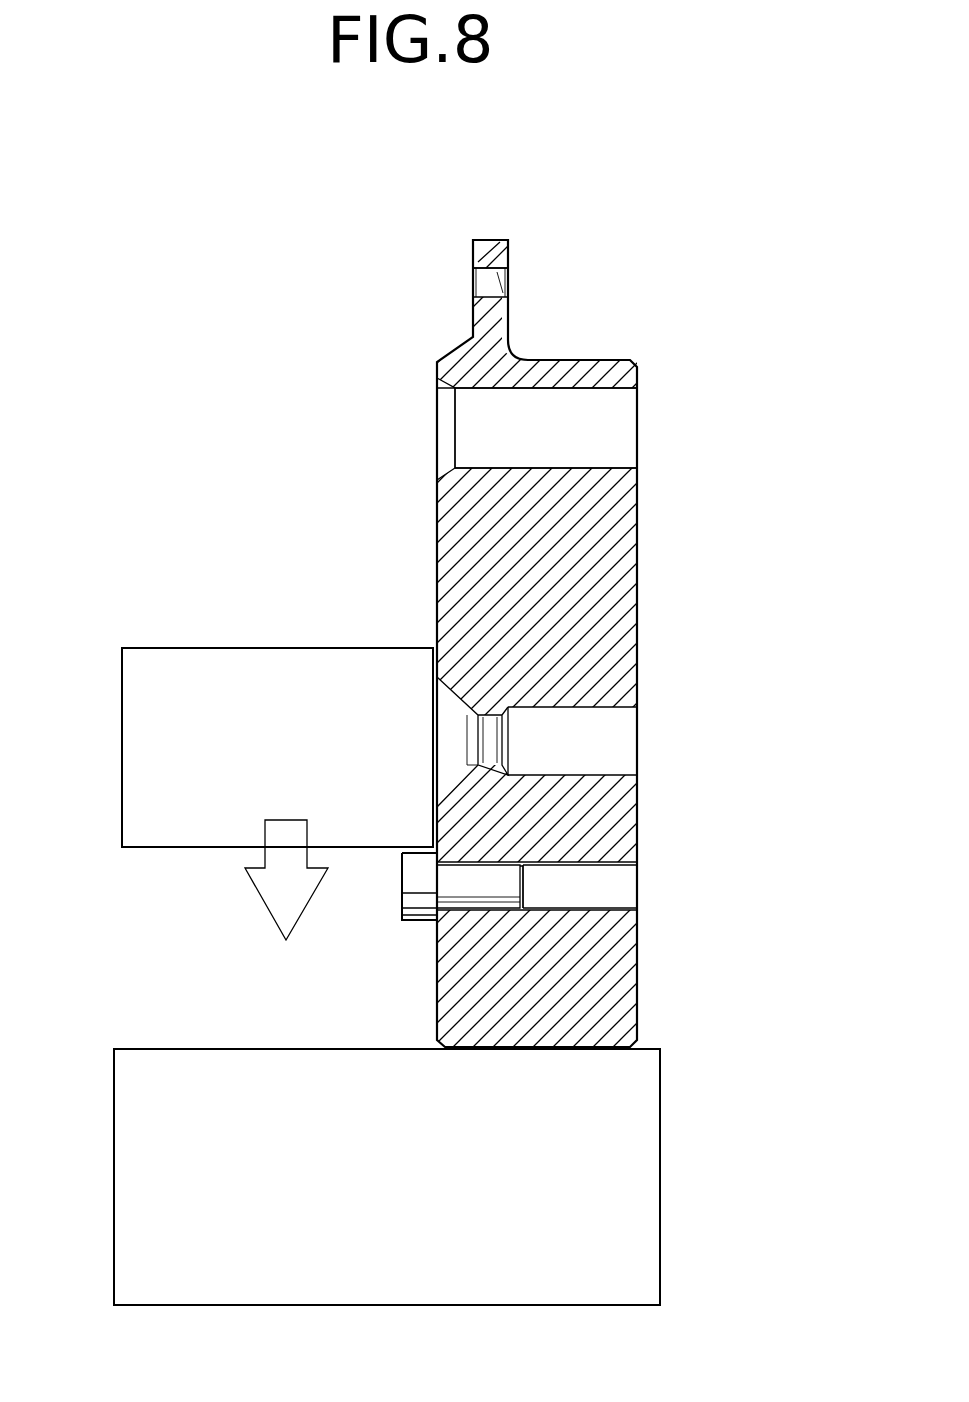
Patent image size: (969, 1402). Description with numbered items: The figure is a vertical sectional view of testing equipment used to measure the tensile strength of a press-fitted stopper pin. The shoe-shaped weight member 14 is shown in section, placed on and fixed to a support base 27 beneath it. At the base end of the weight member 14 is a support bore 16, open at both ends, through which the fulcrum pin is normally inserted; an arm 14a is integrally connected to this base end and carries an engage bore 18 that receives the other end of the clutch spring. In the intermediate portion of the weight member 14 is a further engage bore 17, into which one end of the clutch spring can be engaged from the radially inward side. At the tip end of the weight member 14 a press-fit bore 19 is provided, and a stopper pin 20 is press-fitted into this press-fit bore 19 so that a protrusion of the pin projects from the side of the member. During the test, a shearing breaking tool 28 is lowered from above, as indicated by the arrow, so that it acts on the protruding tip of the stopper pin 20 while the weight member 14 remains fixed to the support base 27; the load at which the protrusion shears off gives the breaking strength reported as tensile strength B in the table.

The weight member 14 is at (627, 990).
The arm 14a is at (482, 245).
The support bore 16 is at (572, 463).
The engage bore 17 is at (497, 747).
The engage bore 18 is at (508, 300).
The press-fit bore 19 is at (610, 863).
The stopper pin 20 is at (402, 888).
The support base 27 is at (180, 1080).
The shearing breaking tool 28 is at (300, 672).